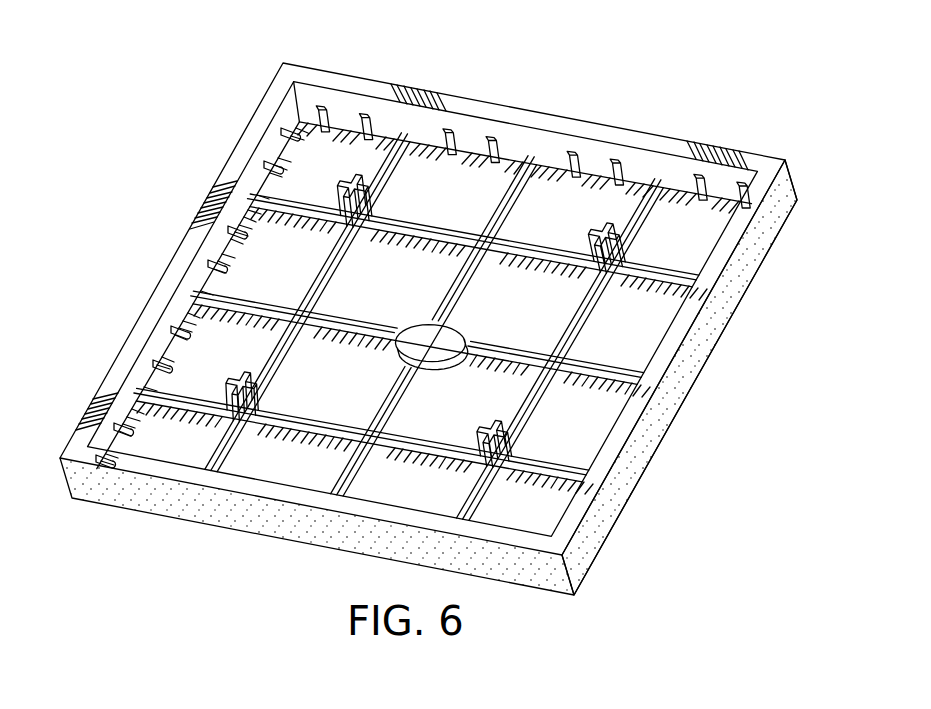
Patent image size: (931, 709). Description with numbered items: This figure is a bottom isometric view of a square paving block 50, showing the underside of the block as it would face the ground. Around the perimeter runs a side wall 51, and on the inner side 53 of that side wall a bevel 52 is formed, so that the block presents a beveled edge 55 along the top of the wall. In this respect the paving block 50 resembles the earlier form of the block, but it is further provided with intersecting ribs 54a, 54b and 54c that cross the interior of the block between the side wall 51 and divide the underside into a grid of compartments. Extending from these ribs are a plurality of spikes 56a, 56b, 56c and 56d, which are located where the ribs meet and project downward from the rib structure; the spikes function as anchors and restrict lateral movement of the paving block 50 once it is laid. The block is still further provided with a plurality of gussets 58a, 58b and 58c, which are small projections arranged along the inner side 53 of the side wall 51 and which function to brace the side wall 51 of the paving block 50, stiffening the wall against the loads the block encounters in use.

The paving block 50 is at (133, 190).
The side wall 51 is at (735, 283).
The bevel 52 is at (657, 142).
The inner side 53 is at (383, 118).
The rib 54a is at (322, 279).
The rib 54b is at (459, 226).
The rib 54c is at (622, 369).
The beveled edge 55 is at (583, 118).
The spike 56a is at (348, 180).
The spike 56b is at (632, 262).
The spike 56c is at (517, 453).
The spike 56d is at (237, 381).
The gusset 58a is at (288, 134).
The gusset 58b is at (452, 133).
The gusset 58c is at (612, 168).